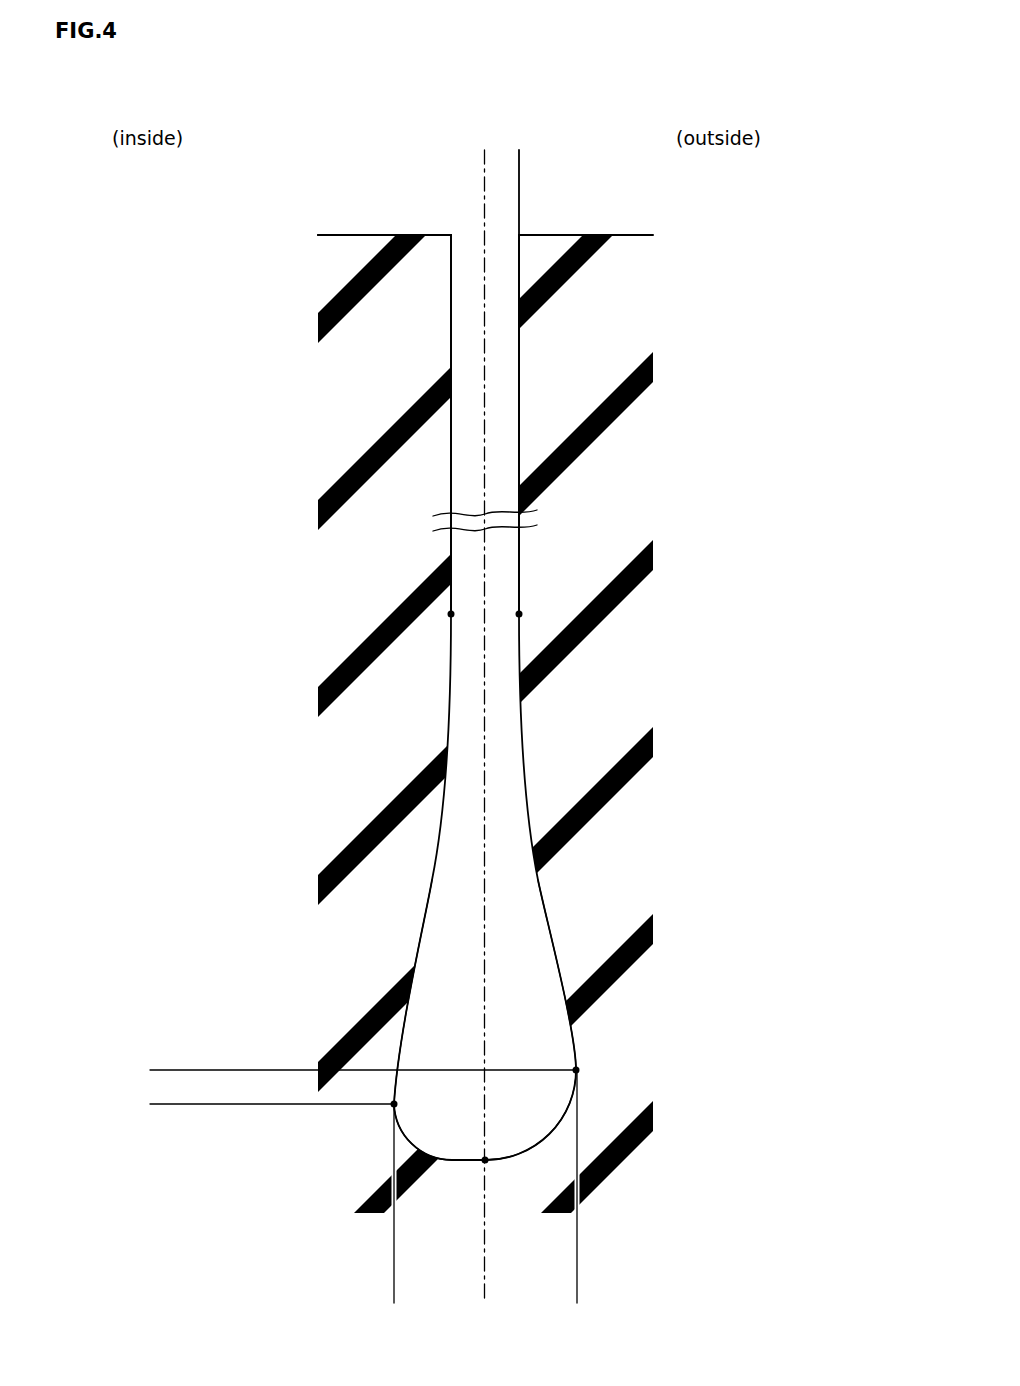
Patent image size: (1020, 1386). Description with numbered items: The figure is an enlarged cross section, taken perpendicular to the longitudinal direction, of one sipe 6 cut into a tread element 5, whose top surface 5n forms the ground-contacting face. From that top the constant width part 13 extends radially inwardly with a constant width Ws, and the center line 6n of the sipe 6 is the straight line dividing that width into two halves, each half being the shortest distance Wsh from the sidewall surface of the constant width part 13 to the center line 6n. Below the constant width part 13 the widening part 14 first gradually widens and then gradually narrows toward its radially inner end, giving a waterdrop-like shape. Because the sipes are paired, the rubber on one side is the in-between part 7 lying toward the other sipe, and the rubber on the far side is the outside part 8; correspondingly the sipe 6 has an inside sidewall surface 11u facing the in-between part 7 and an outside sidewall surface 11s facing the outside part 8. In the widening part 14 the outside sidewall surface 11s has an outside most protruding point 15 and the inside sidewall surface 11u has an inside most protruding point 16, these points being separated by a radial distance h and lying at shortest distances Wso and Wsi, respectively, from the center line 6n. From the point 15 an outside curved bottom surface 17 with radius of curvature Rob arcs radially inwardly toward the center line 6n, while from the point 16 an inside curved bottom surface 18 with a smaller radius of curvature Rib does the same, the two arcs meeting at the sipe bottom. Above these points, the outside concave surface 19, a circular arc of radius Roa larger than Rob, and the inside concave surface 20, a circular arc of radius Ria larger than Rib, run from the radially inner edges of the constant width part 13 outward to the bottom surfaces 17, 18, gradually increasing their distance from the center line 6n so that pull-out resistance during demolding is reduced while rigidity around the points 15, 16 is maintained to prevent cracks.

The tread element 5 is at (360, 370).
The ground contact surface of block 5n is at (357, 233).
The sipe 6 is at (476, 711).
The center line 6n is at (484, 212).
The in-between part 7 is at (386, 557).
The outside part 8 is at (589, 532).
The inside sidewall surface 11u is at (451, 486).
The outside sidewall surface 11s is at (519, 446).
The constant width part 13 is at (497, 561).
The widening part 14 is at (475, 859).
The outside most protruding point 15 is at (576, 1070).
The inside most protruding point 16 is at (394, 1104).
The outside curved bottom surface 17 is at (521, 1158).
The inside curved bottom surface 18 is at (441, 1162).
The outside concave surface 19 is at (550, 958).
The inside concave surface 20 is at (432, 902).
The radius of curvature of inside concave surface Ria is at (422, 955).
The radius of curvature of outside concave surface Roa is at (663, 956).
The radius of curvature of inside curved bottom surface Rib is at (452, 1103).
The radius of curvature of outside curved bottom surface Rob is at (485, 1070).
The radial distance h is at (150, 1042).
The width Ws is at (519, 292).
The shortest distance from sidewall surface of constant width part to center line Wsh is at (548, 155).
The shortest distance from inside most protruding point to center line Wsi is at (484, 1297).
The shortest distance from outside most protruding point to center line Wso is at (592, 1297).